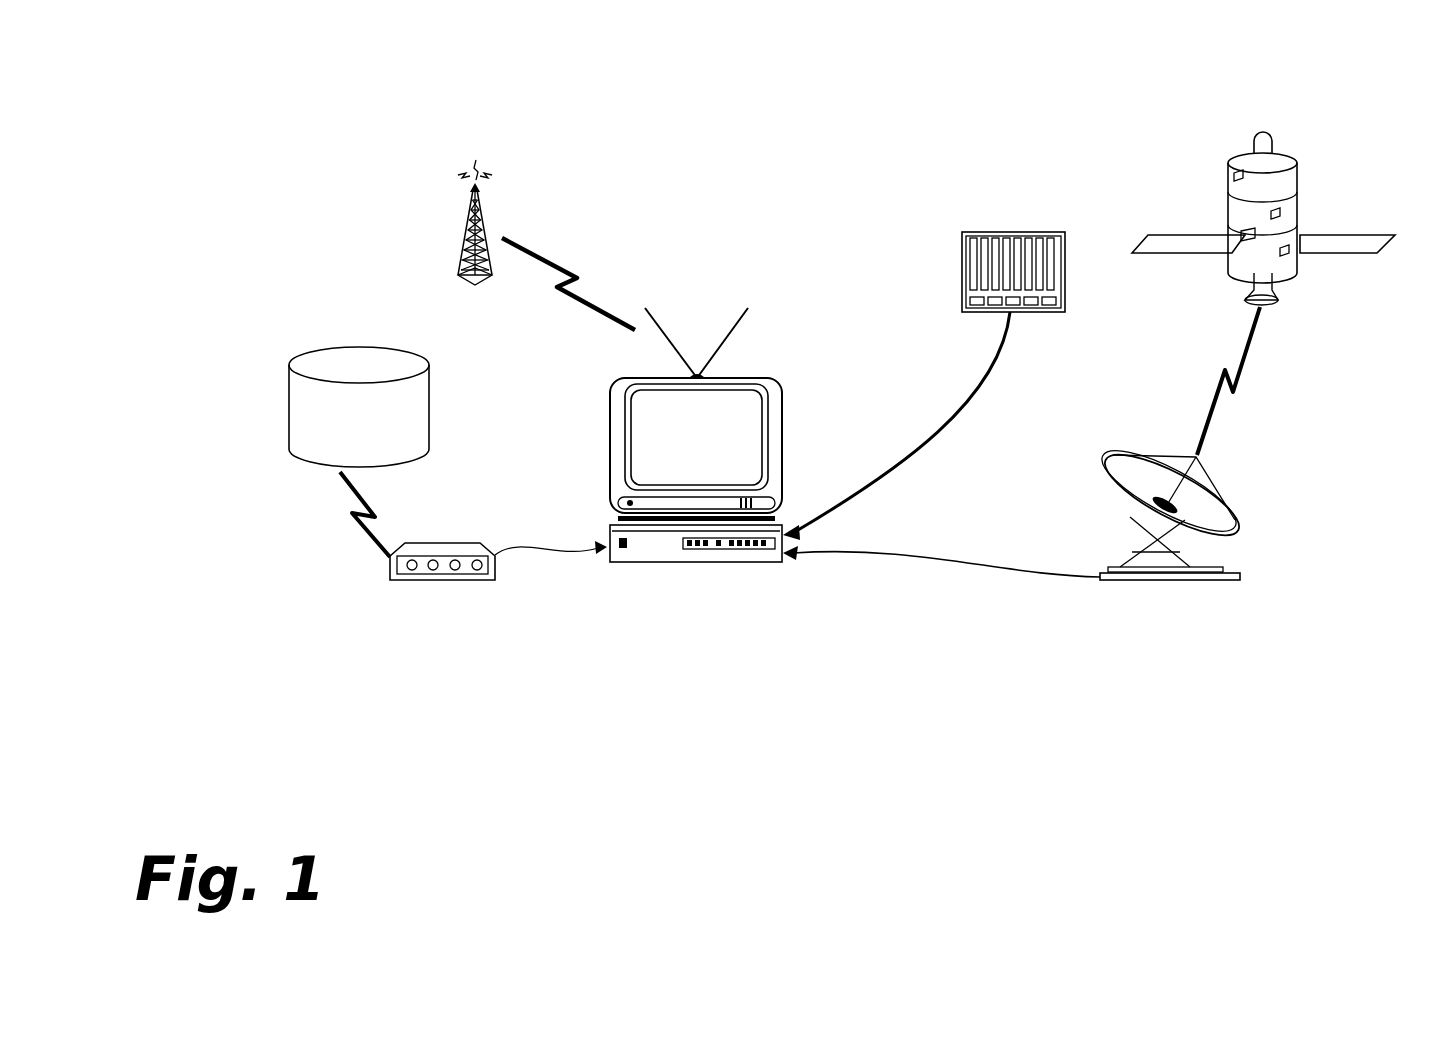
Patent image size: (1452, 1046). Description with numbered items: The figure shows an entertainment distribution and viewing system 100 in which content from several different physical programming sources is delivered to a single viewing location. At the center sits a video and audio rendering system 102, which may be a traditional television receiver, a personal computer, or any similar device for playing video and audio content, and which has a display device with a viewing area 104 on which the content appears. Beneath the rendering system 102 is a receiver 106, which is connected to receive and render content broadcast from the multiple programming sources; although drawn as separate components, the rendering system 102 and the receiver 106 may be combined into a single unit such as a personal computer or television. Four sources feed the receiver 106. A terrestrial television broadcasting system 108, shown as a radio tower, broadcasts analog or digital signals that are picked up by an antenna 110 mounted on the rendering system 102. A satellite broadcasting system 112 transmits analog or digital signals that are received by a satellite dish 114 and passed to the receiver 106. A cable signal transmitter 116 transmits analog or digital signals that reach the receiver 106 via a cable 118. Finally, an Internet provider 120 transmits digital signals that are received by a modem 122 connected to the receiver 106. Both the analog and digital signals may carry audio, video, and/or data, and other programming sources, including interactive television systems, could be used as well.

The entertainment distribution and viewing system 100 is at (645, 108).
The video and audio rendering system 102 is at (780, 380).
The viewing area 104 is at (750, 430).
The receiver 106 is at (645, 557).
The terrestrial television broadcasting system 108 is at (468, 207).
The antenna 110 is at (658, 325).
The satellite broadcasting system 112 is at (1233, 162).
The satellite dish 114 is at (1235, 520).
The cable signal transmitter 116 is at (1012, 232).
The cable 118 is at (937, 437).
The Internet provider 120 is at (378, 358).
The modem 122 is at (445, 540).